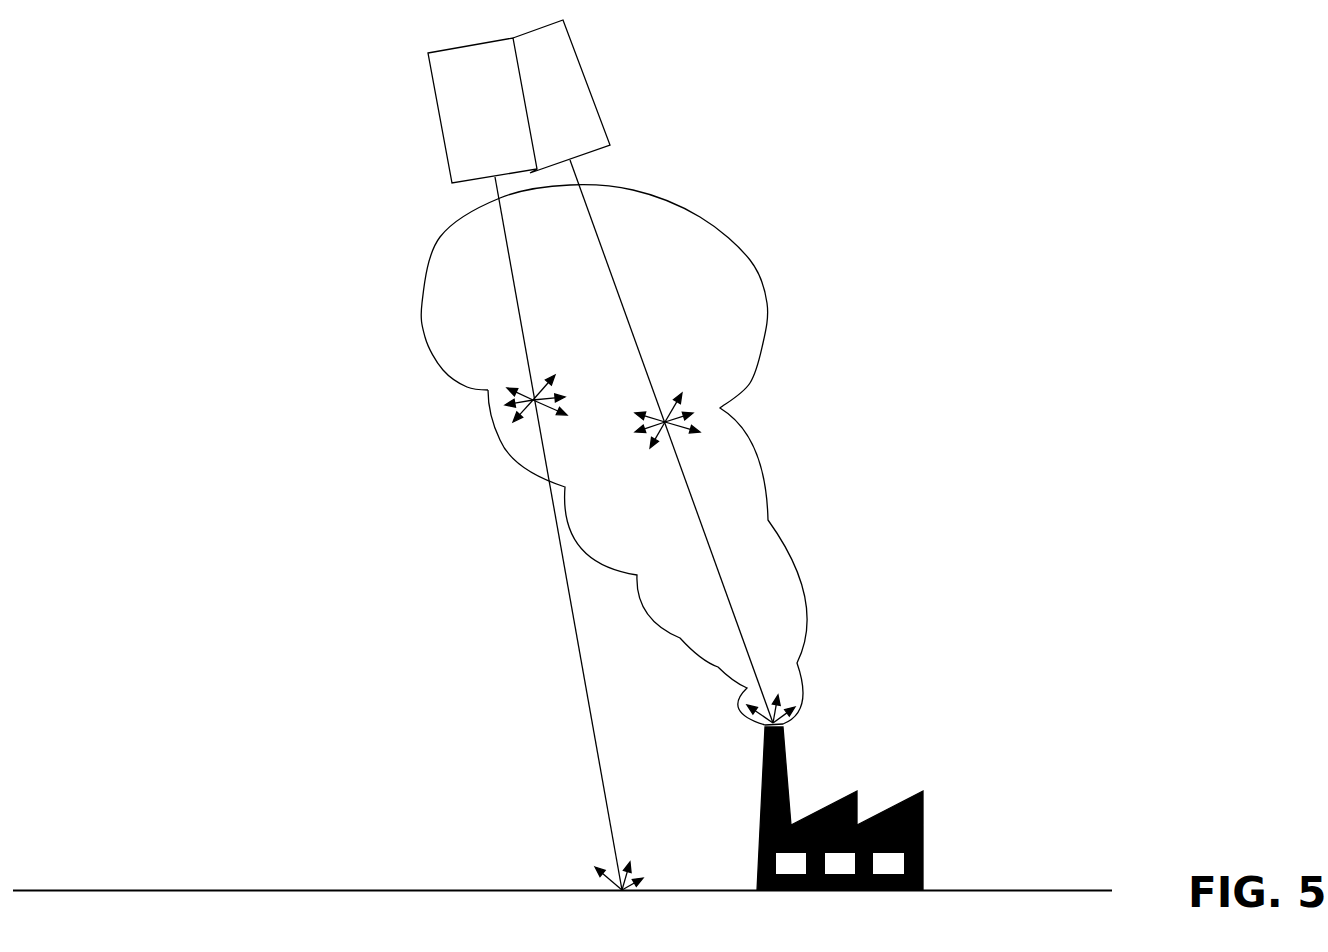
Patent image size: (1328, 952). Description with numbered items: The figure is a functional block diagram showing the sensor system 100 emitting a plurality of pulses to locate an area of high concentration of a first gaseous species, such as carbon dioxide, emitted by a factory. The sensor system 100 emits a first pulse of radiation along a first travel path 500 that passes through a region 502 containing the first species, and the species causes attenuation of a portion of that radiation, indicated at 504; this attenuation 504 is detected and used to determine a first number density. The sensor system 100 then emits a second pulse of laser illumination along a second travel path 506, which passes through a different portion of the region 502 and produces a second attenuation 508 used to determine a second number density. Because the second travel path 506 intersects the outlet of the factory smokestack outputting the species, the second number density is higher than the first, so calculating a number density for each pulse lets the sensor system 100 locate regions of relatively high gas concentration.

The sensor system 100 is at (417, 126).
The first travel path 500 is at (562, 657).
The region 502 is at (805, 278).
The attenuation 504 is at (488, 420).
The second travel path 506 is at (642, 294).
The attenuation 508 is at (722, 419).